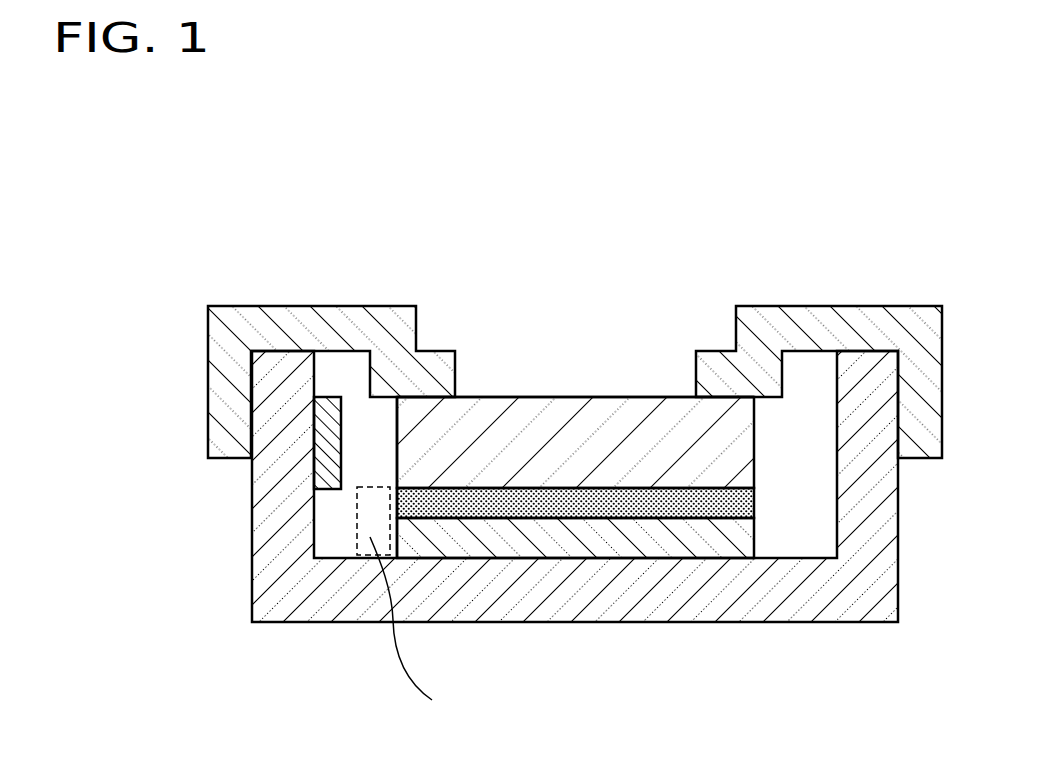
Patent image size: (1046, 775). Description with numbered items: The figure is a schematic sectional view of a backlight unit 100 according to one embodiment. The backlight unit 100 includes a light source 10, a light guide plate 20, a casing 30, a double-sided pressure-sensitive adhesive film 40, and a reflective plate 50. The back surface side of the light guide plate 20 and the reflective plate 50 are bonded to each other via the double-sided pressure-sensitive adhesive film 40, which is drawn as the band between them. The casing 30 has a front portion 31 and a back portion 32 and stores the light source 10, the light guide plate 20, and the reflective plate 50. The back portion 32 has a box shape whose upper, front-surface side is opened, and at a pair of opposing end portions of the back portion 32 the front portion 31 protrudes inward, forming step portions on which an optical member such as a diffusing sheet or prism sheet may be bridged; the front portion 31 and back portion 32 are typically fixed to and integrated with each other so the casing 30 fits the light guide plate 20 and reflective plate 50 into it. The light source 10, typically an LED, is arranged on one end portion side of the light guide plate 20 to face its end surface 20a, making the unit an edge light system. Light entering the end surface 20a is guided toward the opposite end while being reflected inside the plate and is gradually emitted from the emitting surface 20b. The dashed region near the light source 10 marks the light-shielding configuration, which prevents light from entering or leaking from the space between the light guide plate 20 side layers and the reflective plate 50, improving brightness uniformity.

The backlight unit 100 is at (834, 209).
The casing 30 is at (135, 317).
The front portion 31 is at (220, 340).
The back portion 32 is at (258, 535).
The light guide plate 20 is at (618, 433).
The end surface 20a is at (397, 453).
The emitting surface 20b is at (538, 397).
The light source 10 is at (327, 475).
The double-sided pressure-sensitive adhesive film 40 is at (697, 500).
The reflective plate 50 is at (613, 540).